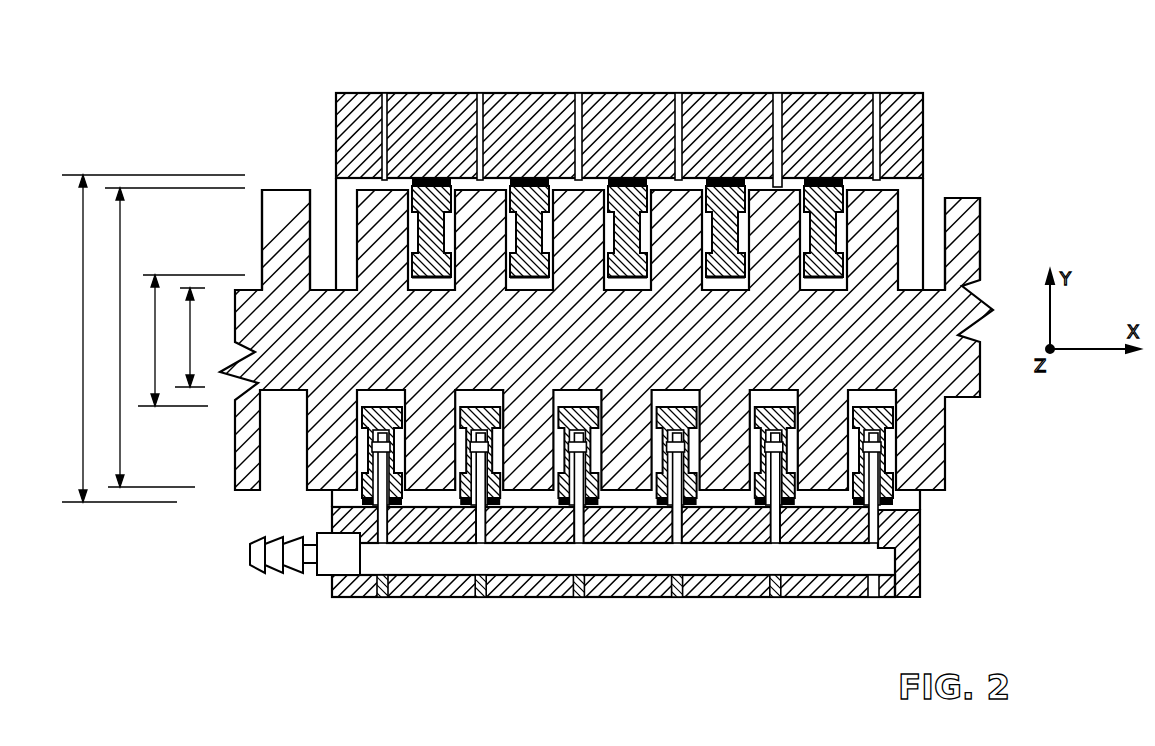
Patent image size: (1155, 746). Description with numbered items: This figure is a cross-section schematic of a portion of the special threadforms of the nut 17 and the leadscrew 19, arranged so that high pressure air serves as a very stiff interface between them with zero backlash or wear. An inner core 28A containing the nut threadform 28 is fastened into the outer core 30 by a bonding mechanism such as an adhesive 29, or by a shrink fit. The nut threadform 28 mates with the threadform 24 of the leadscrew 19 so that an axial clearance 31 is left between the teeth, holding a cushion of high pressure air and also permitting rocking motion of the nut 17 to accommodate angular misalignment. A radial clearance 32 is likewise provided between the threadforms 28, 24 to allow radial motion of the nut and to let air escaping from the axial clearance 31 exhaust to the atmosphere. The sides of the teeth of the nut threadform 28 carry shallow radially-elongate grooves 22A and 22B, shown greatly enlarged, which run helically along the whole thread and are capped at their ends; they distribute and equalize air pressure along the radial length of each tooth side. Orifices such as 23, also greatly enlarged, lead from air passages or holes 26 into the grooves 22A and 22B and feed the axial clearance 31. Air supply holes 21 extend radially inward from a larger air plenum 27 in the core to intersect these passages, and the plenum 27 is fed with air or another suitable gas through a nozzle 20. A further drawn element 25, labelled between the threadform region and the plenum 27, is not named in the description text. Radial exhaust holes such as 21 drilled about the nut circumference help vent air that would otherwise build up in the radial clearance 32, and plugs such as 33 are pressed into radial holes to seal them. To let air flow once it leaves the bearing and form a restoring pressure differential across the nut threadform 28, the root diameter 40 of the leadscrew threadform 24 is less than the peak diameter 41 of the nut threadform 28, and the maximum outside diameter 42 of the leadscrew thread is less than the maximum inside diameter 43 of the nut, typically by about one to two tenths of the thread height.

The nut 17 is at (946, 113).
The leadscrew 19 is at (993, 234).
The nozzle 20 is at (258, 562).
The air supply holes 21 is at (383, 92).
The radially-elongate groove 22A is at (412, 235).
The radially-elongate groove 22B is at (413, 190).
The orifice 23 is at (370, 448).
The threadform of the leadscrew 24 is at (262, 256).
The retaining plate 25 is at (900, 497).
The air passages 26 is at (478, 543).
The air plenum 27 is at (820, 563).
The threadform of the nut 28 is at (885, 421).
The inner core 28A is at (830, 237).
The adhesive 29 is at (636, 180).
The outer core 30 is at (757, 93).
The axial clearance 31 is at (650, 487).
The radial clearance 32 is at (760, 285).
The plug 33 is at (380, 592).
The root diameter 40 is at (190, 337).
The peak diameter 41 is at (191, 340).
The maximum outside diameter 42 is at (175, 337).
The maximum inside diameter 43 is at (153, 338).